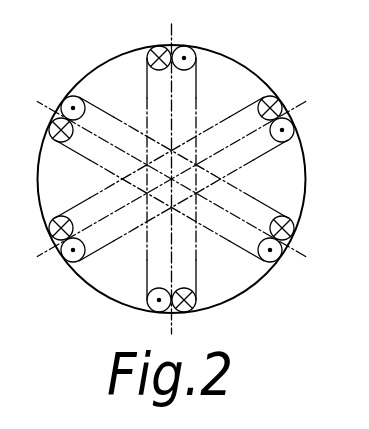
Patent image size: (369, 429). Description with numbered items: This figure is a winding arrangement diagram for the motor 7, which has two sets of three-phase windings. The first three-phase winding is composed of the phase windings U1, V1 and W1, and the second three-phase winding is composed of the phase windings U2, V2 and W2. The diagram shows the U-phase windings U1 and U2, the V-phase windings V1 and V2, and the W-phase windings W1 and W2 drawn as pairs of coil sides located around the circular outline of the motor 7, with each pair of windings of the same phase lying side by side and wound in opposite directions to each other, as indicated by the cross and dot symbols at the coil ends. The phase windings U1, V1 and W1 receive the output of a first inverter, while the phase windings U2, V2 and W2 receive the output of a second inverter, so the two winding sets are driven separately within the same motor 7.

The motor 7 is at (304, 185).
The phase winding U1 is at (151, 172).
The phase winding U2 is at (190, 161).
The phase winding V1 is at (174, 162).
The phase winding V2 is at (198, 185).
The phase winding W1 is at (186, 176).
The phase winding W2 is at (184, 205).